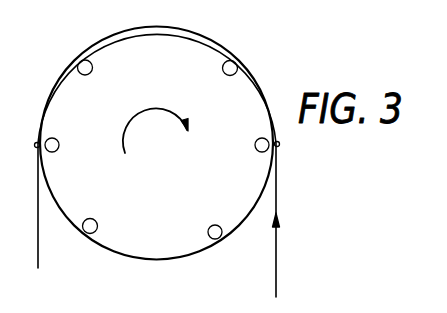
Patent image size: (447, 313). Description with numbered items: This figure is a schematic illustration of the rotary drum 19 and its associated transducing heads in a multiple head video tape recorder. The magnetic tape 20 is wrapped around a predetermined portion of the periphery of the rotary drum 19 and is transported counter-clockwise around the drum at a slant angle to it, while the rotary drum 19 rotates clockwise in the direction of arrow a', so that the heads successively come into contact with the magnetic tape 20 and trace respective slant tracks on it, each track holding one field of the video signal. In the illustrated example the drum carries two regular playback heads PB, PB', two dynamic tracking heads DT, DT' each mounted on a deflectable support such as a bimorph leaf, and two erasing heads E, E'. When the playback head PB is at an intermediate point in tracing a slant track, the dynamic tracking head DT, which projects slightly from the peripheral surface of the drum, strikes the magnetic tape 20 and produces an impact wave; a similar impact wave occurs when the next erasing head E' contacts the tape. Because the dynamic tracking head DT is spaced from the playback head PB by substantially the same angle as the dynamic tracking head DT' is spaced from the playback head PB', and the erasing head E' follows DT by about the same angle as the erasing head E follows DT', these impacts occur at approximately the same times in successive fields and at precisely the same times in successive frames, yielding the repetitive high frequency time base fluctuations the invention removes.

The rotary drum 19 is at (178, 259).
The magnetic tape 20 is at (278, 244).
The playback head PB is at (98, 72).
The playback head PB' is at (202, 222).
The erasing head E is at (220, 78).
The erasing head E' is at (100, 217).
The dynamic tracking head DT is at (67, 145).
The dynamic tracking head DT' is at (240, 143).
The arrow a' is at (155, 130).